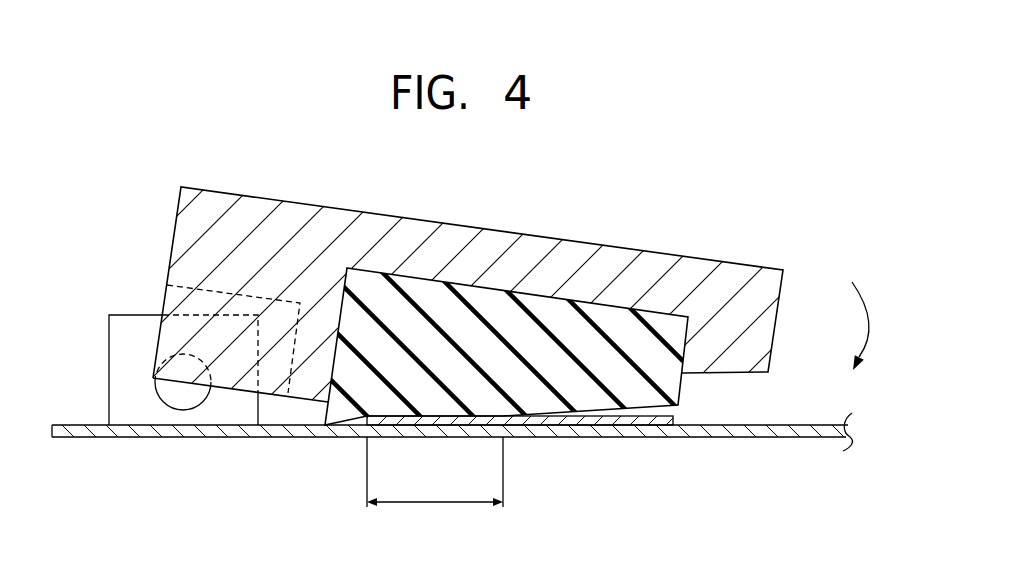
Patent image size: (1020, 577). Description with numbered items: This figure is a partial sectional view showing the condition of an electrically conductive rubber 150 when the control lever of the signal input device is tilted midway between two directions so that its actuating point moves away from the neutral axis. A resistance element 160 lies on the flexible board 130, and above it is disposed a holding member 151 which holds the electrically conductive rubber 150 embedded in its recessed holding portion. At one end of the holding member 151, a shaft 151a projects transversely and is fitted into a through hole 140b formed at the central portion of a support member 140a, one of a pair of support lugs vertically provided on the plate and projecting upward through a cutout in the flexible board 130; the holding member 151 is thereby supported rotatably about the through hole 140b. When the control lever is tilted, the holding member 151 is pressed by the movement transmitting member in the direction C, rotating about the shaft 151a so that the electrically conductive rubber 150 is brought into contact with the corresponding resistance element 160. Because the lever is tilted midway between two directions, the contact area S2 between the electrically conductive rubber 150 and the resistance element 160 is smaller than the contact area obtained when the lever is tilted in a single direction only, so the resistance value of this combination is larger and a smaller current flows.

The flexible board 130 is at (755, 432).
The support member 140a is at (132, 368).
The through hole 140b is at (168, 405).
The electrically conductive rubber 150 is at (500, 308).
The holding member 151 is at (700, 240).
The shaft 151a is at (184, 397).
The resistance element 160 is at (633, 430).
The contact area S2 is at (435, 472).
The pressing direction C is at (874, 326).